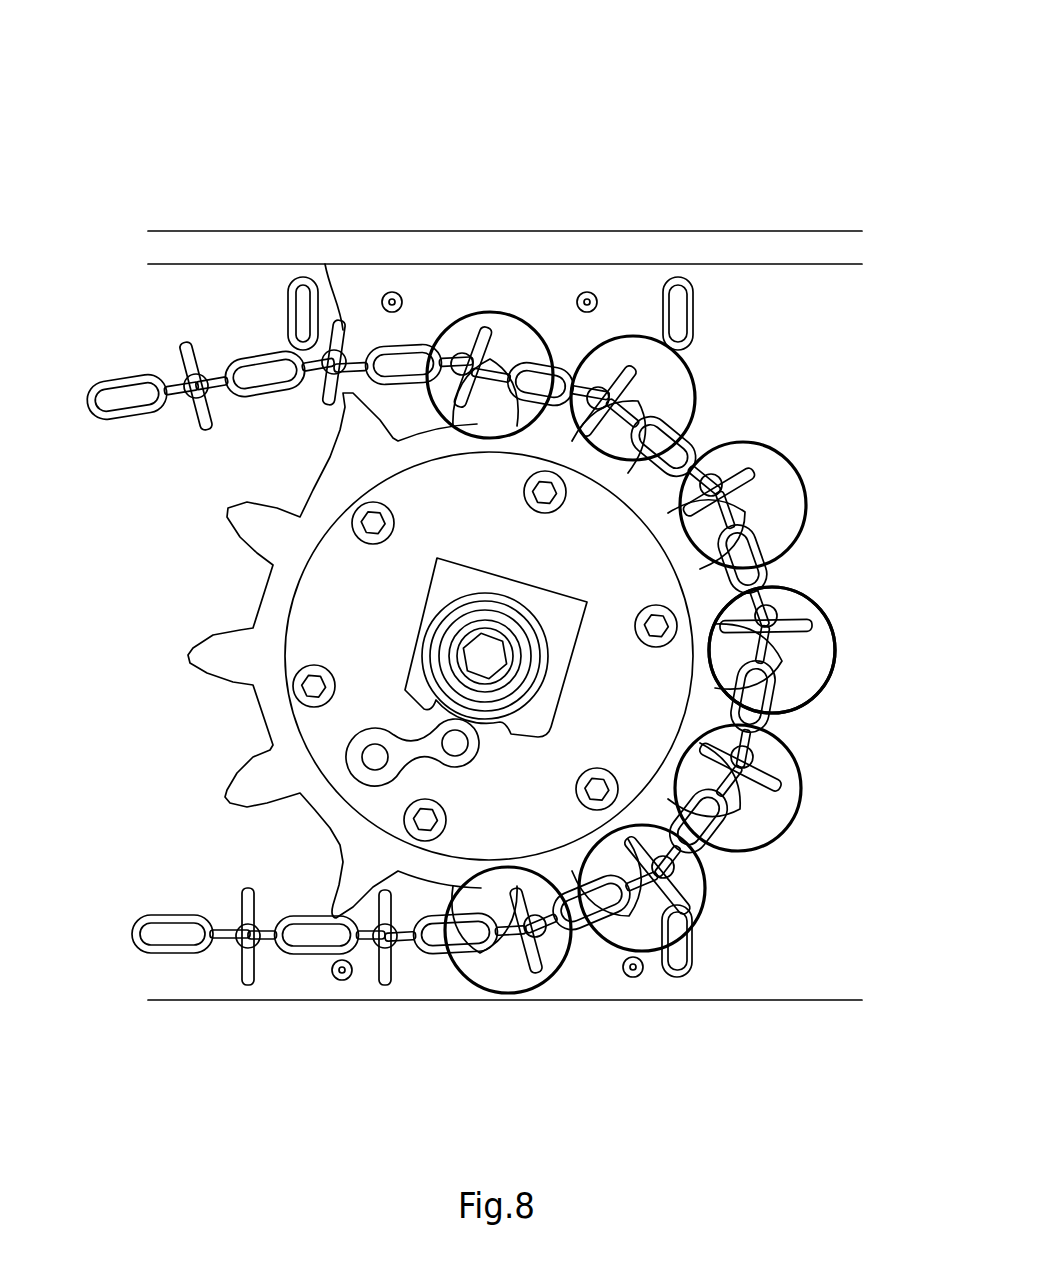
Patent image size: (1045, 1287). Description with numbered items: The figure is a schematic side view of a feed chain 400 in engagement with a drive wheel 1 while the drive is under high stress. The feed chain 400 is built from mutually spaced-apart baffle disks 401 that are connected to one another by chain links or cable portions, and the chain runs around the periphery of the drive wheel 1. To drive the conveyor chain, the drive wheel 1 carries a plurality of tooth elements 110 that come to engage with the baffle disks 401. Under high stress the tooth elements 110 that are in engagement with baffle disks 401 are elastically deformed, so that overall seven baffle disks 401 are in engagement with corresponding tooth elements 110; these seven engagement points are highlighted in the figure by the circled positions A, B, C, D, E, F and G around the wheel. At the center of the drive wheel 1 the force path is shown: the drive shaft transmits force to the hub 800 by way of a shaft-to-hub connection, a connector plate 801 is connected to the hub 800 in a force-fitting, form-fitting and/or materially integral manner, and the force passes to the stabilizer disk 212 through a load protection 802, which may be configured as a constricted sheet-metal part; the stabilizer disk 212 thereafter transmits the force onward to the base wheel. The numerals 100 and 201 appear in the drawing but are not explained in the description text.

The drive wheel 1 is at (191, 146).
The sprocket wheel 100 is at (200, 807).
The tooth elements 110 is at (194, 627).
The hub shaft 201 is at (523, 622).
The stabilizer disk 212 is at (787, 592).
The feed chain 400 is at (243, 343).
The baffle disks 401 is at (340, 318).
The hub 800 is at (454, 668).
The connector plate 801 is at (483, 765).
The load protection 802 is at (393, 767).
The engagement point A is at (490, 312).
The engagement point B is at (620, 336).
The engagement point C is at (762, 447).
The engagement point D is at (820, 695).
The engagement point E is at (780, 840).
The engagement point F is at (613, 953).
The engagement point G is at (510, 995).